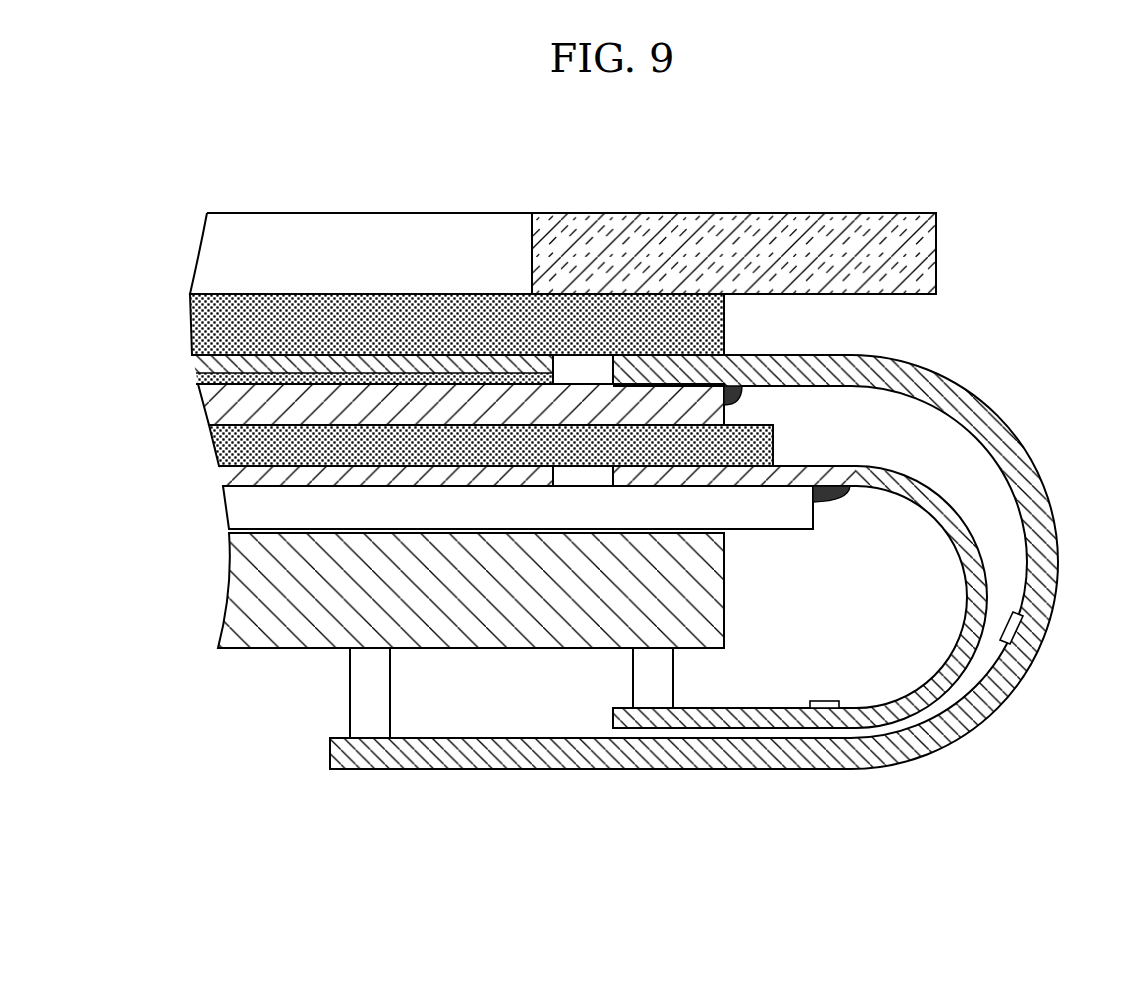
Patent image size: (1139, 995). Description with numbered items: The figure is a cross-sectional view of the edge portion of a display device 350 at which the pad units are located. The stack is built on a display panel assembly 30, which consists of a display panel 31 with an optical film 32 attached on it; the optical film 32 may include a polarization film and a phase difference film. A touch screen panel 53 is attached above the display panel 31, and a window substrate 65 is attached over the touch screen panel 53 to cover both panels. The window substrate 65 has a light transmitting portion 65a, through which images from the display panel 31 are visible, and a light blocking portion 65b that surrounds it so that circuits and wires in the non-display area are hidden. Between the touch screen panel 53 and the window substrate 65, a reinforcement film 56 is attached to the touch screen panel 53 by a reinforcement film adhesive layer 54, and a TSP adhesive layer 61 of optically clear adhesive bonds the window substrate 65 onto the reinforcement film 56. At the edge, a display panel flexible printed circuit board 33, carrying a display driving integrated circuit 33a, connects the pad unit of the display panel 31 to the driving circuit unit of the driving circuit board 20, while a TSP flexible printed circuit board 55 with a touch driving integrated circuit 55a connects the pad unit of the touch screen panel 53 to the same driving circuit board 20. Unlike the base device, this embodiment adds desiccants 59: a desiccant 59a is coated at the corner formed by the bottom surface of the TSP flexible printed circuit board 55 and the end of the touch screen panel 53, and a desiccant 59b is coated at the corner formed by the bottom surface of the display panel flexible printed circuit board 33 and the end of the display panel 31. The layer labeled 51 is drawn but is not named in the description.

The display device 350 is at (723, 176).
The window substrate 65 is at (563, 216).
The light transmitting portion 65a is at (489, 242).
The light blocking portion 65b is at (734, 234).
The TSP adhesive layer 61 is at (210, 319).
The reinforcement film 56 is at (215, 364).
The reinforcement film adhesive layer 54 is at (196, 380).
The touch screen panel 53 is at (226, 401).
The adhesive layer 51 is at (231, 441).
The display panel assembly 30 is at (497, 497).
The optical film 32 is at (241, 474).
The display panel 31 is at (246, 509).
The driving circuit board 20 is at (262, 585).
The desiccants 59 is at (808, 406).
The desiccant 59a is at (818, 362).
The desiccant 59b is at (853, 485).
The TSP flexible printed circuit board 55 is at (1040, 578).
The touch driving integrated circuit 55a is at (1010, 630).
The display panel flexible printed circuit board 33 is at (970, 590).
The display driving integrated circuit 33a is at (828, 700).